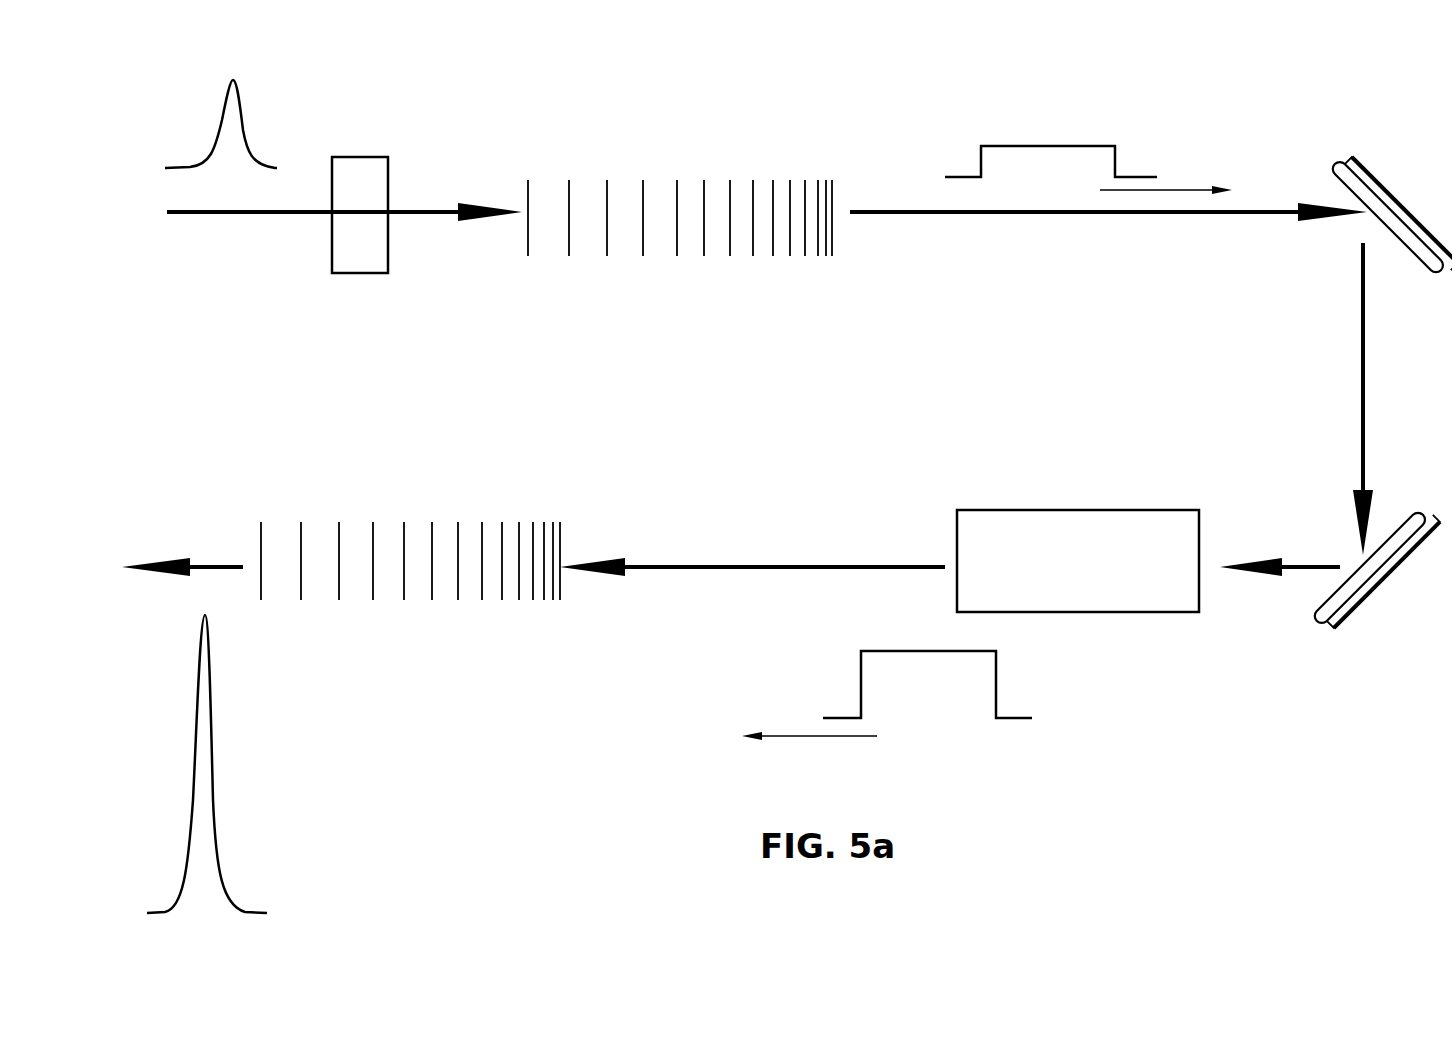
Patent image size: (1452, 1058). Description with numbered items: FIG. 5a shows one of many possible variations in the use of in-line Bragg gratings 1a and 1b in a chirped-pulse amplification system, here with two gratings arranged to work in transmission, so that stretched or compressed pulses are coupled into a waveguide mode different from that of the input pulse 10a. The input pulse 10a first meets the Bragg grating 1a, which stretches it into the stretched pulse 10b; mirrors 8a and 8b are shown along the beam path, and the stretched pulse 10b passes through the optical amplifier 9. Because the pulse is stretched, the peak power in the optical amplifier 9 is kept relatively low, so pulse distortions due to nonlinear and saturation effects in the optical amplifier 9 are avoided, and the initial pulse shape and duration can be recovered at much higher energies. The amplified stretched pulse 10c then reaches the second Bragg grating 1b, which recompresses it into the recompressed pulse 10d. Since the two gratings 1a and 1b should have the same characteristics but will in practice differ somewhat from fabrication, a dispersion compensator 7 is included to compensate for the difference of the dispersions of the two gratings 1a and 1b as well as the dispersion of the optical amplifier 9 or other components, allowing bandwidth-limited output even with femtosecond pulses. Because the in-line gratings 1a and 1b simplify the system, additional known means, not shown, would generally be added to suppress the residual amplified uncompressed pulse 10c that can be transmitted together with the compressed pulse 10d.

The input pulse 10a is at (237, 118).
The dispersion compensator 7 is at (370, 165).
The Bragg grating 1a is at (608, 160).
The stretched pulse 10b is at (1062, 146).
The mirror 8a is at (1393, 180).
The optical amplifier 9 is at (1060, 517).
The mirror 8b is at (1393, 580).
The Bragg grating 1b is at (432, 494).
The recompressed pulse 10d is at (207, 740).
The stretched pulse 10c is at (997, 688).